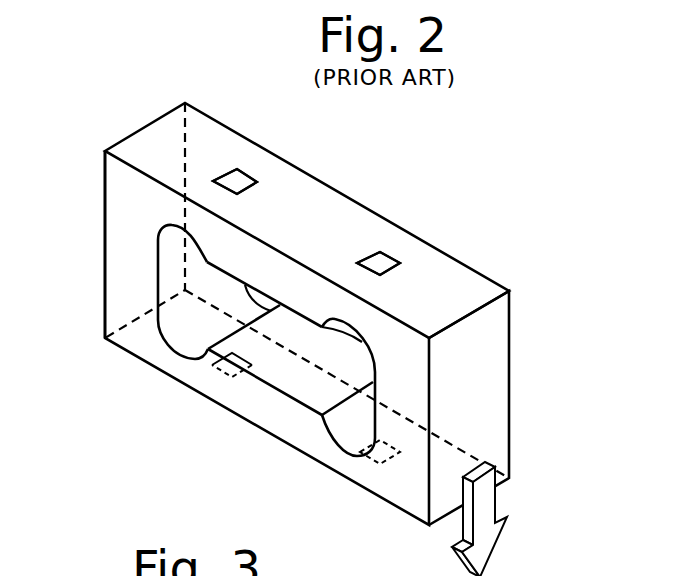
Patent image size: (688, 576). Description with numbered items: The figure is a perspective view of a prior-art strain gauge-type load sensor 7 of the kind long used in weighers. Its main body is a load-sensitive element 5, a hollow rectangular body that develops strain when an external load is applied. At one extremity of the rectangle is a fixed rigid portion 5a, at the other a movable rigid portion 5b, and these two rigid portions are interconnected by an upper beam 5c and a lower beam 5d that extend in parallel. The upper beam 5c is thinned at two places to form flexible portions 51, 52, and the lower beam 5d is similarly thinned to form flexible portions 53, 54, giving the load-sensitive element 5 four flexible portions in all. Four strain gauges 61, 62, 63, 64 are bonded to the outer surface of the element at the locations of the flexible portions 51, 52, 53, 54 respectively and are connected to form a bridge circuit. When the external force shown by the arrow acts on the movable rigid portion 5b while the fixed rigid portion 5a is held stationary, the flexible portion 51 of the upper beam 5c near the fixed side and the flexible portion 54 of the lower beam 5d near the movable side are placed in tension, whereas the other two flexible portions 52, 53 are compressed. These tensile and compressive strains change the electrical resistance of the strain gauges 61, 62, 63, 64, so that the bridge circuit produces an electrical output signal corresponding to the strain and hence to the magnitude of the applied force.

The load-sensitive element 5 is at (311, 318).
The fixed rigid portion 5a is at (125, 261).
The movable rigid portion 5b is at (482, 402).
The upper beam 5c is at (333, 208).
The lower beam 5d is at (268, 415).
The flexible portion 51 is at (255, 168).
The flexible portion 52 is at (403, 252).
The flexible portion 53 is at (187, 371).
The flexible portion 54 is at (356, 459).
The strain gauge 61 is at (233, 178).
The strain gauge 62 is at (378, 264).
The strain gauge 63 is at (229, 378).
The strain gauge 64 is at (384, 462).
The load sensor 7 is at (94, 159).